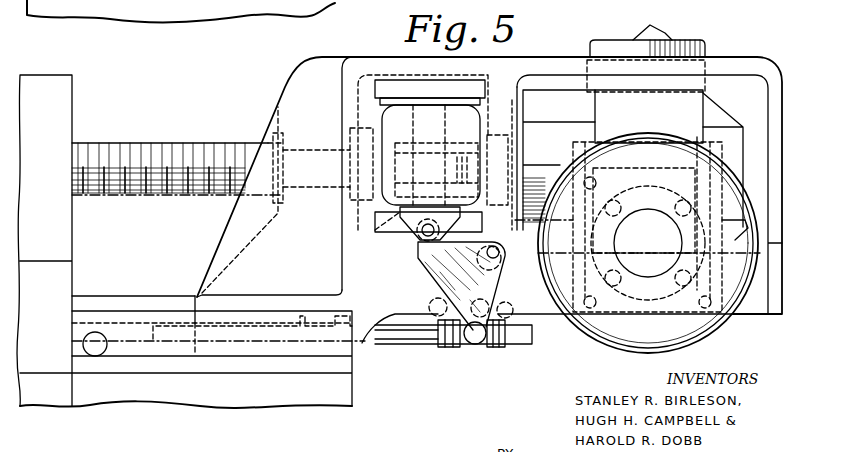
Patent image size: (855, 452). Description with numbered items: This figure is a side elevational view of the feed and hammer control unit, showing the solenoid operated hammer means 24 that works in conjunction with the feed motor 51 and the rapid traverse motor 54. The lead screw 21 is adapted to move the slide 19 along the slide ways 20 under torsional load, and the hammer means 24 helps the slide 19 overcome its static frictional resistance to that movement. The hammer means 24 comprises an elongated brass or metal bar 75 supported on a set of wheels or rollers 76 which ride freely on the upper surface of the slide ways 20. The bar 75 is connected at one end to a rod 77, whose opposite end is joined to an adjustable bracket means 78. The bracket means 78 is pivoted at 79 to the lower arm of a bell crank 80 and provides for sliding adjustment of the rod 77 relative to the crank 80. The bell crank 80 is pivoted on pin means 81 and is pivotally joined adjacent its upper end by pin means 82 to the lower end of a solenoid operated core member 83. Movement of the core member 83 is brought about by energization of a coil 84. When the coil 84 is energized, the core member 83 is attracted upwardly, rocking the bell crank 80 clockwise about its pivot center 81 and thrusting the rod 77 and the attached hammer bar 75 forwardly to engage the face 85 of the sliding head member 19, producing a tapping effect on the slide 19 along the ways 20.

The slide 19 is at (62, 108).
The slide ways 20 is at (330, 425).
The lead screw 21 is at (164, 143).
The solenoid operated hammer means 24 is at (468, 118).
The feed motor 51 is at (703, 43).
The rapid traverse motor 54 is at (600, 343).
The bar 75 is at (268, 333).
The wheels or rollers 76 is at (90, 352).
The rod 77 is at (423, 340).
The adjustable bracket means 78 is at (465, 345).
The pivot 79 is at (482, 338).
The bell crank 80 is at (448, 268).
The pin means 81 is at (497, 257).
The pin means 82 is at (420, 240).
The core member 83 is at (402, 240).
The coil 84 is at (388, 118).
The face 85 is at (72, 293).